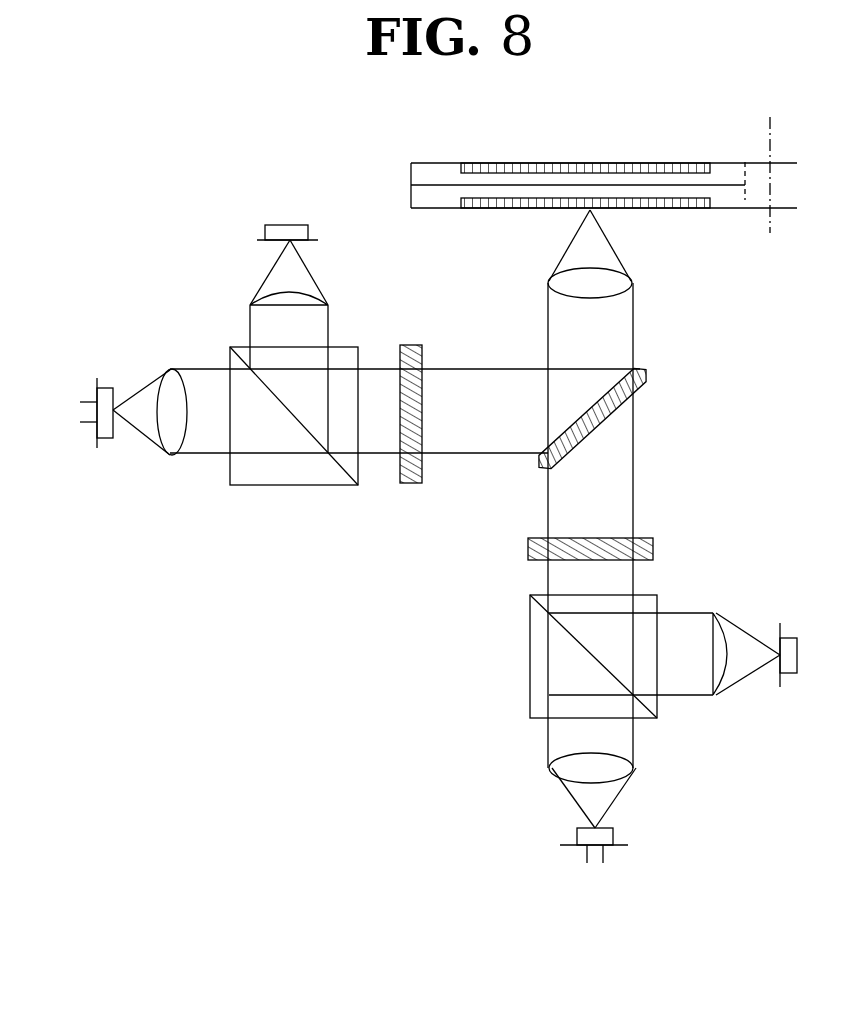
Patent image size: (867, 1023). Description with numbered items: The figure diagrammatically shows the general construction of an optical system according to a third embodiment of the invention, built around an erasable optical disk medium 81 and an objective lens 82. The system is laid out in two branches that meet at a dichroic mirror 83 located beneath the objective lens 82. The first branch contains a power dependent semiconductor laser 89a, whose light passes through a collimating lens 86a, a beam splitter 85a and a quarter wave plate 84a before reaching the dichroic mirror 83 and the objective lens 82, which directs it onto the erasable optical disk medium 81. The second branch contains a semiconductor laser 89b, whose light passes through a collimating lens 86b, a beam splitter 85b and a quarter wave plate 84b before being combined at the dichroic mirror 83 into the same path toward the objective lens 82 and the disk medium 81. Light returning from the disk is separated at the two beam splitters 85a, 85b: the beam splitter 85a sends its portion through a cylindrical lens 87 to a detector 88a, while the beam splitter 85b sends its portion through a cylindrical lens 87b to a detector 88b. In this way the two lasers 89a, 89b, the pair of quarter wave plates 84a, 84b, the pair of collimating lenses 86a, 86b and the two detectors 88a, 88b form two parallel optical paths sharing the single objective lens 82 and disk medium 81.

The erasable optical disk medium 81 is at (475, 163).
The objective lens 82 is at (628, 282).
The dichroic mirror 83 is at (648, 375).
The quarter wave plate 84a is at (653, 543).
The quarter wave plate 84b is at (418, 345).
The beam splitter 85a is at (530, 650).
The beam splitter 85b is at (358, 485).
The collimating lens 86a is at (552, 772).
The collimating lens 86b is at (170, 458).
The cylindrical lens 87 is at (719, 700).
The cylindrical lens 87b is at (328, 303).
The detector 88a is at (787, 685).
The detector 88b is at (287, 225).
The power dependent semiconductor laser 89a is at (613, 835).
The semiconductor laser 89b is at (105, 385).